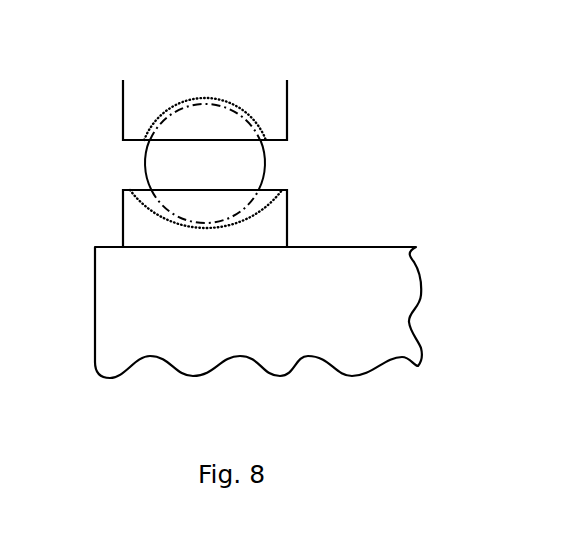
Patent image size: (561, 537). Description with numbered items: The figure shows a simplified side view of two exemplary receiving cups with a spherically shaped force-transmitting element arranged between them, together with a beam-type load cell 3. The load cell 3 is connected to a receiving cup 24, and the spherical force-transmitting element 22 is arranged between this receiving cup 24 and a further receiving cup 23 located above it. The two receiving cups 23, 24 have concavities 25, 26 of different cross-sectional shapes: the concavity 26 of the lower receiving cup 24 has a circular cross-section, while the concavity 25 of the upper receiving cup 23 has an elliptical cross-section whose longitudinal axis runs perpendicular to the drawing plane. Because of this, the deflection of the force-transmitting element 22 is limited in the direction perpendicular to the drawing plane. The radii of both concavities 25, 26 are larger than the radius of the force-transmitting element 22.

The load cell 3 is at (357, 320).
The force-transmitting element 22 is at (190, 169).
The receiving cup 23 is at (268, 102).
The receiving cup 24 is at (145, 230).
The concavity 25 is at (210, 98).
The concavity 26 is at (176, 227).